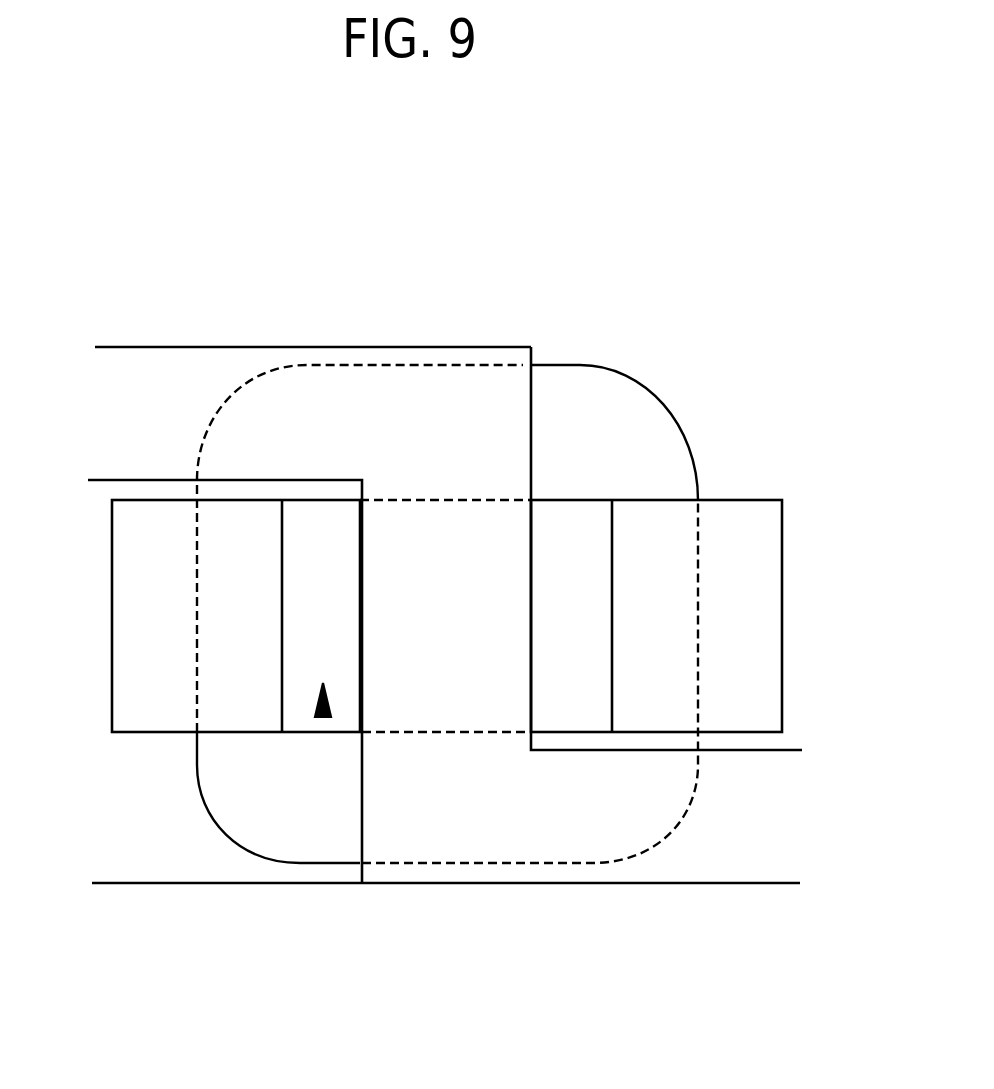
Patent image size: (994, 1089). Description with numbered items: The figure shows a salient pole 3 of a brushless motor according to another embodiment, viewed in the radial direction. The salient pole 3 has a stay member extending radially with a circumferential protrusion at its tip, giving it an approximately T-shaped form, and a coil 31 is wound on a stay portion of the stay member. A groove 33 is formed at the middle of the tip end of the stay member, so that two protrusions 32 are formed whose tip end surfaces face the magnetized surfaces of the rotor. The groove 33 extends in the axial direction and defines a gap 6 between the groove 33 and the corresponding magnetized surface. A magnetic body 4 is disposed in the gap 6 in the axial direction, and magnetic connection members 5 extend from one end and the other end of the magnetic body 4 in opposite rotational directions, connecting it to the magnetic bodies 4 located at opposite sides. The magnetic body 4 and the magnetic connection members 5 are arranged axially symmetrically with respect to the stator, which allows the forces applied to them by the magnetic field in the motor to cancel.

The salient pole 3 is at (447, 283).
The magnetic body 4 is at (360, 577).
The magnetic connection member 5 is at (233, 347).
The gap 6 is at (323, 717).
The coil 31 is at (500, 365).
The protrusion 32 is at (150, 480).
The groove 33 is at (572, 500).